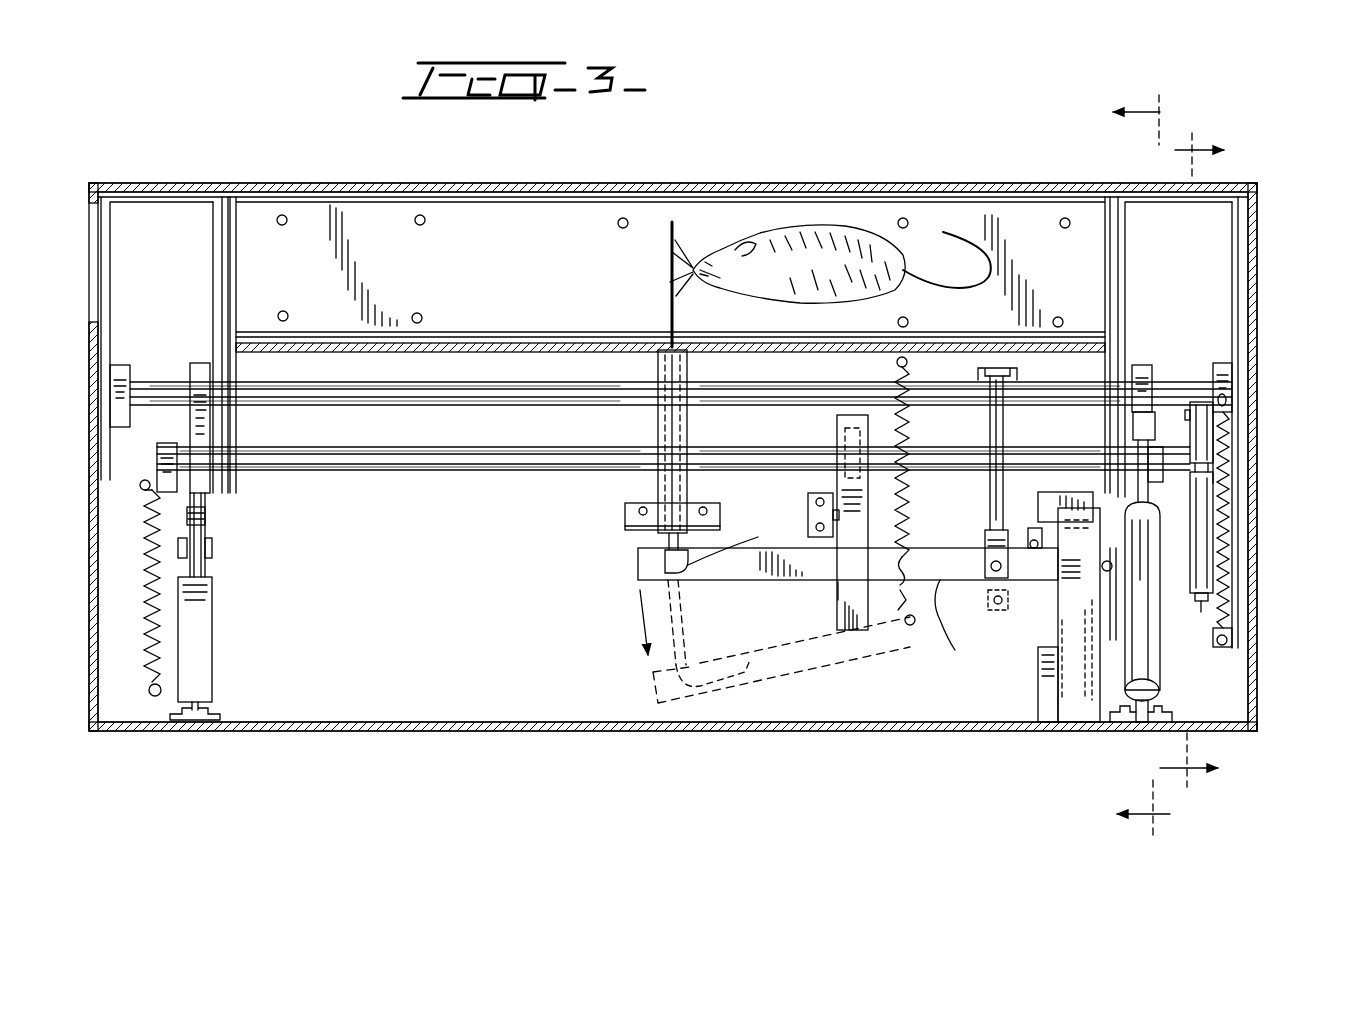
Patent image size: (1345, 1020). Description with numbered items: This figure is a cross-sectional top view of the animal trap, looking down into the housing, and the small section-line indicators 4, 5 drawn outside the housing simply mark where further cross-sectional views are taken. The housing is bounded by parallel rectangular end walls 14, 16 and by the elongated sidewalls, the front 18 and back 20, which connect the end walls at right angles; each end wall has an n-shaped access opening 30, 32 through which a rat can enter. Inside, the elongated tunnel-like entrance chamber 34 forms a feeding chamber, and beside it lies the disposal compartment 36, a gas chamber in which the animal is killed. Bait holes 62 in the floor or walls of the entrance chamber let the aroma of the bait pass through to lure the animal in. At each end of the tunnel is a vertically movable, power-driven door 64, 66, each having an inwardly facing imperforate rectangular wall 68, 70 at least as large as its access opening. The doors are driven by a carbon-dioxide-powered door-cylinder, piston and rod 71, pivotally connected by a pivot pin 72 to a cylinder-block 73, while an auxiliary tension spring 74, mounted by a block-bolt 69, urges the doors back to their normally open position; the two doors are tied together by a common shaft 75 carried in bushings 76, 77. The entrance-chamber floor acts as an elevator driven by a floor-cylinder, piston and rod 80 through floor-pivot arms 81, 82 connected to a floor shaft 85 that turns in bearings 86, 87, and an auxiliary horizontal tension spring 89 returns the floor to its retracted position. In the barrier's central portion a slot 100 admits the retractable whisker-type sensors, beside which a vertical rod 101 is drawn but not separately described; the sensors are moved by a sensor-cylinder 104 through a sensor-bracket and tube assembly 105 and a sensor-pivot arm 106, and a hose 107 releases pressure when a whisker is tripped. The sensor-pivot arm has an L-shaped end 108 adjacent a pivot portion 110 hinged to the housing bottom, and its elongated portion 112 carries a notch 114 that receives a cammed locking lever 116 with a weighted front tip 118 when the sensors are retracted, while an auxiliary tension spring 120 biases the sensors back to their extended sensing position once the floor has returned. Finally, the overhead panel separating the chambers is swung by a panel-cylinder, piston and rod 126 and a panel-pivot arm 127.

The section line 4- 4 is at (1192, 462).
The section line 5- 5 is at (1143, 464).
The end wall 14 is at (1257, 690).
The end wall 16 is at (89, 688).
The front sidewall 18 is at (397, 731).
The back sidewall 20 is at (385, 184).
The access entrance opening 30 is at (1257, 270).
The access entrance opening 32 is at (89, 283).
The entrance chamber 34 is at (490, 279).
The disposal compartment 36 is at (483, 578).
The bait holes 62 is at (627, 219).
The door 64 is at (1208, 205).
The door 66 is at (140, 205).
The imperforate door wall 68 is at (1232, 307).
The block-bolt 69 is at (1227, 643).
The imperforate door wall 70 is at (112, 296).
The door-cylinder, piston and rod 71 is at (1213, 470).
The pivot pin 72 is at (1200, 612).
The cylinder-block 73 is at (1232, 636).
The auxiliary tension spring 74 is at (1213, 540).
The common shaft 75 is at (552, 406).
The bushing 76 is at (1225, 363).
The bushing 77 is at (112, 365).
The floor-cylinder, piston and rod 80 is at (1150, 506).
The floor-pivot arm 81 is at (1152, 378).
The floor-pivot arm 82 is at (198, 363).
The floor shaft 85 is at (460, 471).
The bearing 86 is at (1163, 458).
The bearing 87 is at (157, 455).
The auxiliary horizontal tension spring 89 is at (144, 632).
The feeler switch-receiving slot 100 is at (662, 346).
The gate rod 101 is at (670, 252).
The sensor-cylinder 104 is at (988, 530).
The sensor-bracket and tube assembly 105 is at (690, 503).
The sensor-pivot arm 106 is at (965, 620).
The hose 107 is at (742, 530).
The L-shaped end 108 is at (1060, 676).
The pivot portion 110 is at (1103, 570).
The elongated portion 112 is at (790, 586).
The notch 114 is at (838, 582).
The cammed locking lever 116 is at (837, 427).
The weighted front tip 118 is at (852, 632).
The auxiliary tension spring 120 is at (905, 428).
The panel-cylinder, piston and rod 126 is at (205, 578).
The panel-pivot arm 127 is at (205, 516).